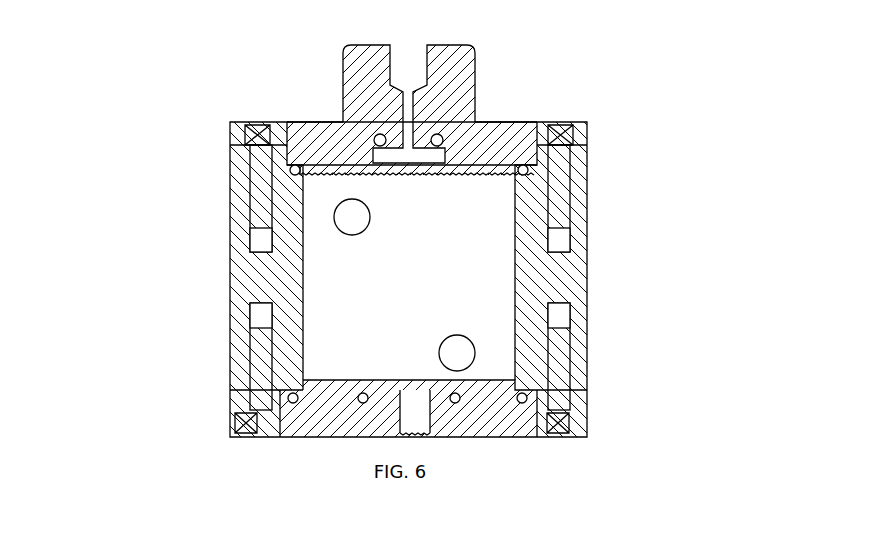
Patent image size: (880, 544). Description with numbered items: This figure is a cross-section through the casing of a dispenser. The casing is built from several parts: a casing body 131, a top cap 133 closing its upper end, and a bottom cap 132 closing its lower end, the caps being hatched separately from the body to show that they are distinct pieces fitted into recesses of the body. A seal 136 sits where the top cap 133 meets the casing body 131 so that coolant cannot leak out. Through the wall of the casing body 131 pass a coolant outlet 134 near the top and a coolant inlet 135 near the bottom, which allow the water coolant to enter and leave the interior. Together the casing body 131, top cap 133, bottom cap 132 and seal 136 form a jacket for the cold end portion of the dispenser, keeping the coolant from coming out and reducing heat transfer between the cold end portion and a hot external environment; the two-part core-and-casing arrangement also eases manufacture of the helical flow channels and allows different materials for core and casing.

The casing body 131 is at (588, 260).
The bottom cap 132 is at (297, 437).
The top cap 133 is at (497, 121).
The coolant outlet 134 is at (337, 221).
The coolant inlet 135 is at (475, 355).
The seal 136 is at (385, 137).